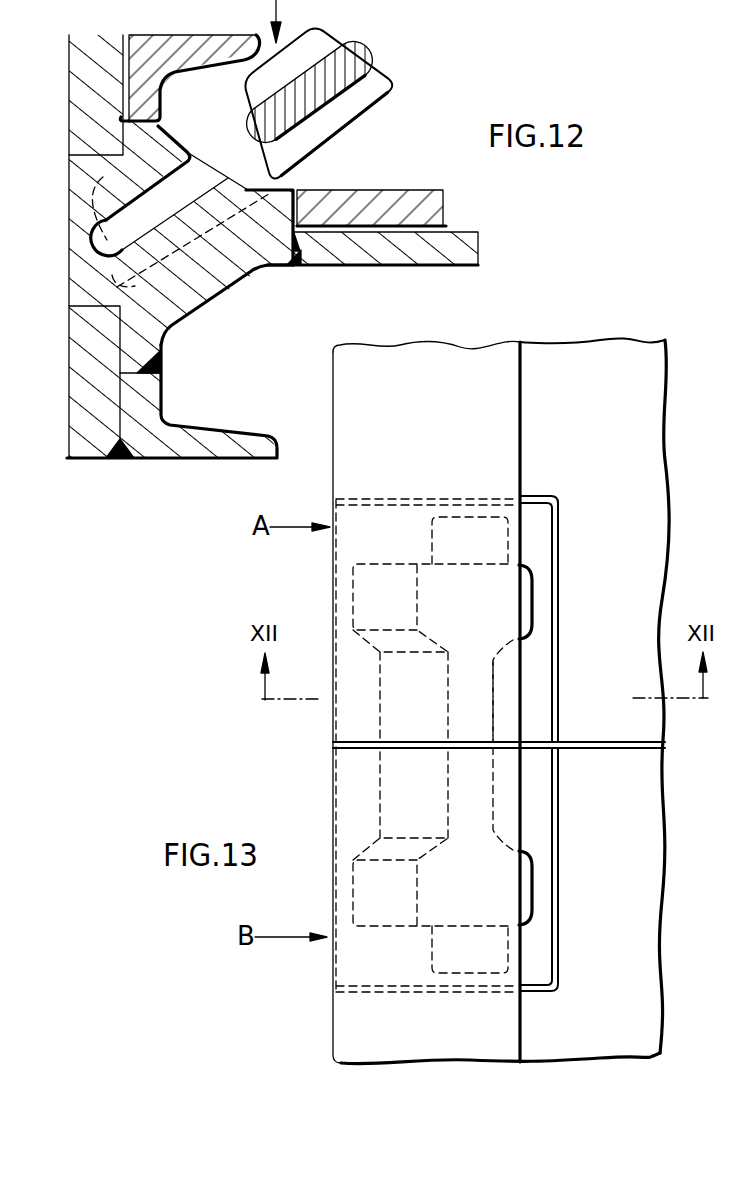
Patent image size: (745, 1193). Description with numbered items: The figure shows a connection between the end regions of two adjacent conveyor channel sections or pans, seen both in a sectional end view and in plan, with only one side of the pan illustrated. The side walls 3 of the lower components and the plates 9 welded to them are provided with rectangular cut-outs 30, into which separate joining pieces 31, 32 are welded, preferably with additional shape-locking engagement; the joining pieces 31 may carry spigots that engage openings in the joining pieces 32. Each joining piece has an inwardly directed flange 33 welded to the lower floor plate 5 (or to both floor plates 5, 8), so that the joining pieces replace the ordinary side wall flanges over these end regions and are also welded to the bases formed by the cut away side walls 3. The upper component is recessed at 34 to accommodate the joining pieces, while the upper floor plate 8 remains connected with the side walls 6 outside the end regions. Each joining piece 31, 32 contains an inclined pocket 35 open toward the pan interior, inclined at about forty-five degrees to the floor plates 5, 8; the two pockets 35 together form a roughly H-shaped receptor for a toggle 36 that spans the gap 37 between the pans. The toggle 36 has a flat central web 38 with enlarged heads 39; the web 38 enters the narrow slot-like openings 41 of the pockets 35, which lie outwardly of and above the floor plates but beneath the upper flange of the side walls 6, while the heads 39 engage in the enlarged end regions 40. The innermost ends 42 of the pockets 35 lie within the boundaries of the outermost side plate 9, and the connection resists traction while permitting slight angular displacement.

In FIG. 12, the side wall 3 is at (160, 393).
In FIG. 12, the lower floor plate 5 is at (397, 263).
In FIG. 12, the side wall 6 is at (197, 45).
In FIG. 12, the upper floor plate 8 is at (418, 198).
In FIG. 12, the plate 9 is at (83, 382).
In FIG. 13, the cut-out 30 is at (558, 540).
In FIG. 12, the joining piece 31 is at (225, 277).
In FIG. 13, the joining piece 31 is at (543, 637).
In FIG. 13, the joining piece 32 is at (537, 815).
In FIG. 12, the inwardly directed flange 33 is at (298, 264).
In FIG. 12, the recess 34 is at (158, 127).
In FIG. 12, the inclined pocket 35 is at (120, 222).
In FIG. 13, the inclined pocket 35 is at (483, 717).
In FIG. 12, the toggle 36 is at (376, 49).
In FIG. 13, the gap 37 is at (330, 745).
In FIG. 12, the central web 38 is at (342, 58).
In FIG. 12, the enlarged head 39 is at (350, 117).
In FIG. 12, the enlarged end region 40 is at (90, 192).
In FIG. 13, the enlarged end region 40 is at (527, 590).
In FIG. 12, the slot-like opening 41 is at (203, 167).
In FIG. 12, the innermost end 42 is at (97, 243).